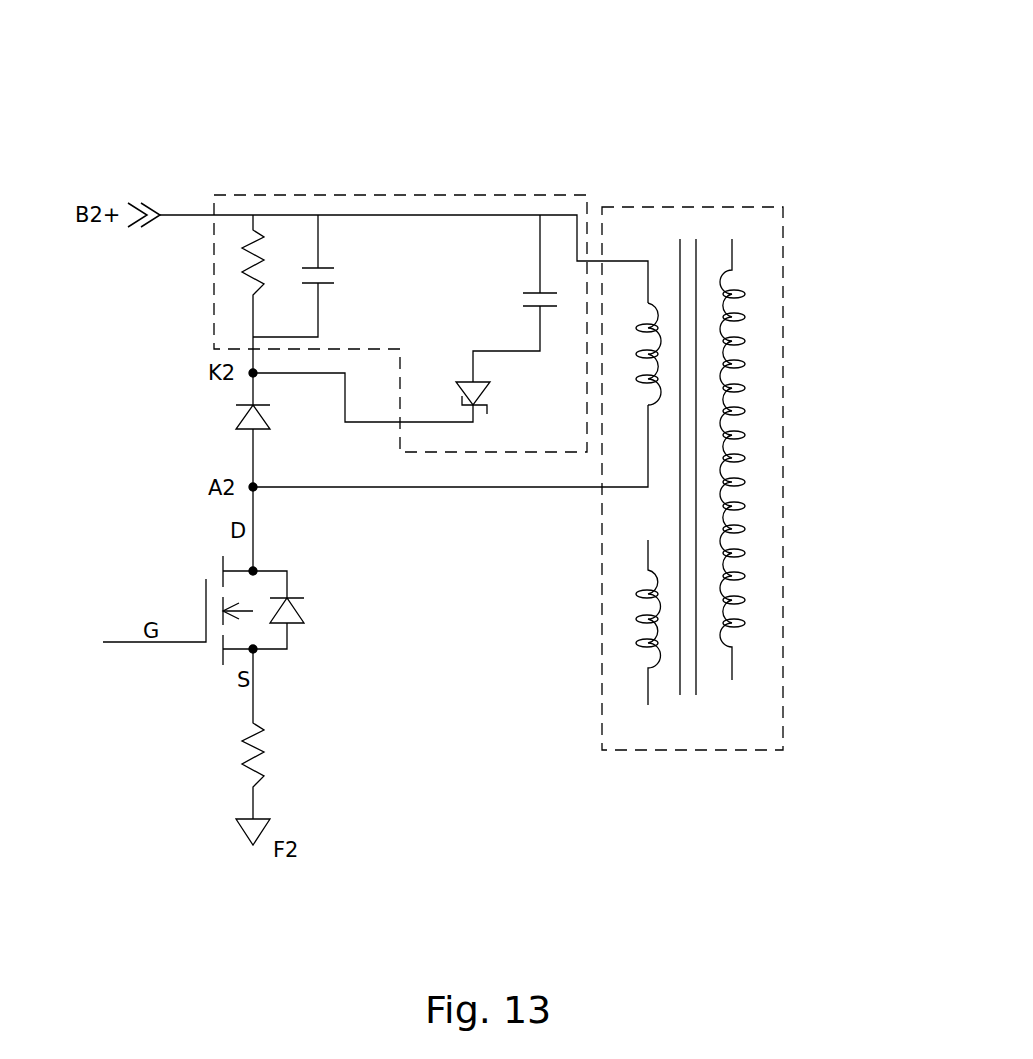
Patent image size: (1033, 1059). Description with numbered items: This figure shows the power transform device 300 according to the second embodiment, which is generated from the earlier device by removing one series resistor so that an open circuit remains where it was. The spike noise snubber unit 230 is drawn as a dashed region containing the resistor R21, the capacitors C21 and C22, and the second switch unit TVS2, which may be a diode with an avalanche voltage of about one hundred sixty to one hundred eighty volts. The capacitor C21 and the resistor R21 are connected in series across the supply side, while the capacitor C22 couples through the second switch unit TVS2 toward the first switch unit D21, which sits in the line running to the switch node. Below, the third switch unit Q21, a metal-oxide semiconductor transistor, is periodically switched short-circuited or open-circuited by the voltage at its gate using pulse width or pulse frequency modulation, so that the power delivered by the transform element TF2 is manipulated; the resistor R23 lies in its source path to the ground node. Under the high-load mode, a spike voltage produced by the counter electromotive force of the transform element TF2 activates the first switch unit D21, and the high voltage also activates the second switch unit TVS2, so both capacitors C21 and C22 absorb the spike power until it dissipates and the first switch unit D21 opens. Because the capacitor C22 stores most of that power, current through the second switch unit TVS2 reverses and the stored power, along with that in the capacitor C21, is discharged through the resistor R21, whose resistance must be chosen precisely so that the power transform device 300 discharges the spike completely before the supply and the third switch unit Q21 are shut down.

The power transform device 300 is at (742, 101).
The spike noise snubber unit 230 is at (268, 195).
The resistor R21 is at (273, 276).
The capacitor C21 is at (293, 276).
The capacitor C22 is at (515, 298).
The second switch unit TVS2 is at (399, 397).
The first switch unit D21 is at (275, 425).
The third switch unit Q21 is at (228, 610).
The resistor R23 is at (230, 734).
The transform element TF2 is at (723, 207).